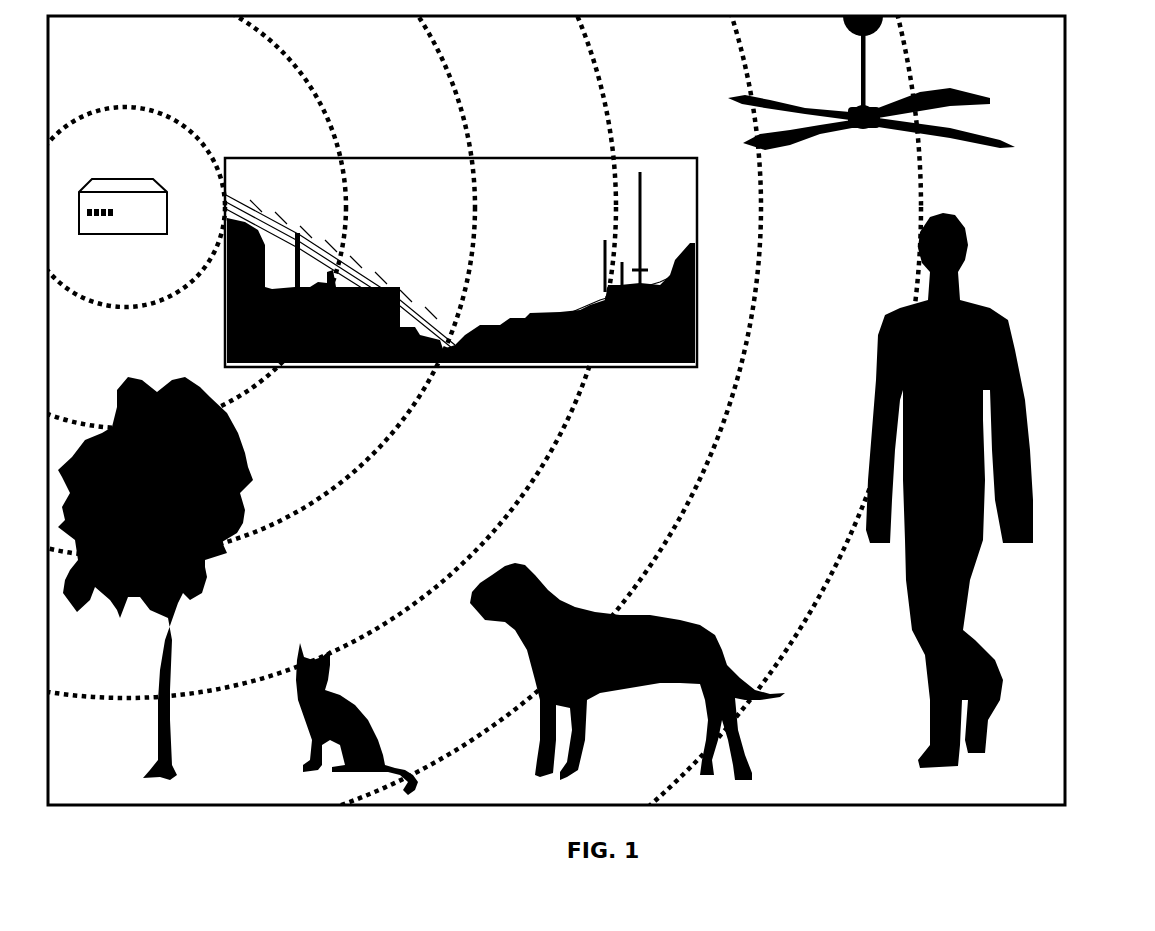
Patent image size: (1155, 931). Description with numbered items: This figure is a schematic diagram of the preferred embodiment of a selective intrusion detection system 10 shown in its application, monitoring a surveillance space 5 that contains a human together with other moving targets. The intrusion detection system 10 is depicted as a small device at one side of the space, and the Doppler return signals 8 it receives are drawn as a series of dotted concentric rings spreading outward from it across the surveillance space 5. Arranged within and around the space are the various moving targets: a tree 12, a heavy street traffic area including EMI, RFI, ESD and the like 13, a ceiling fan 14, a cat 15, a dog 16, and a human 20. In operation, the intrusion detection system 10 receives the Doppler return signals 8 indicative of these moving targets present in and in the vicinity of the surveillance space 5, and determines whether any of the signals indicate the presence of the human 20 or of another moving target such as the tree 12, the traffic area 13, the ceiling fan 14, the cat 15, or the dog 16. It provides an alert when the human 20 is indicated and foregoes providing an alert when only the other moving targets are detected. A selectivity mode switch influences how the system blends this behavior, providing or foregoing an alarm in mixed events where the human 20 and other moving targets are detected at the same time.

The surveillance space 5 is at (1075, 137).
The Doppler return signals 8 is at (215, 147).
The selective intrusion detection system 10 is at (108, 173).
The tree 12 is at (218, 557).
The heavy street traffic area including EMI, RFI, ESD and the like 13 is at (538, 366).
The ceiling fan 14 is at (852, 128).
The cat 15 is at (393, 753).
The dog 16 is at (677, 613).
The human 20 is at (997, 310).